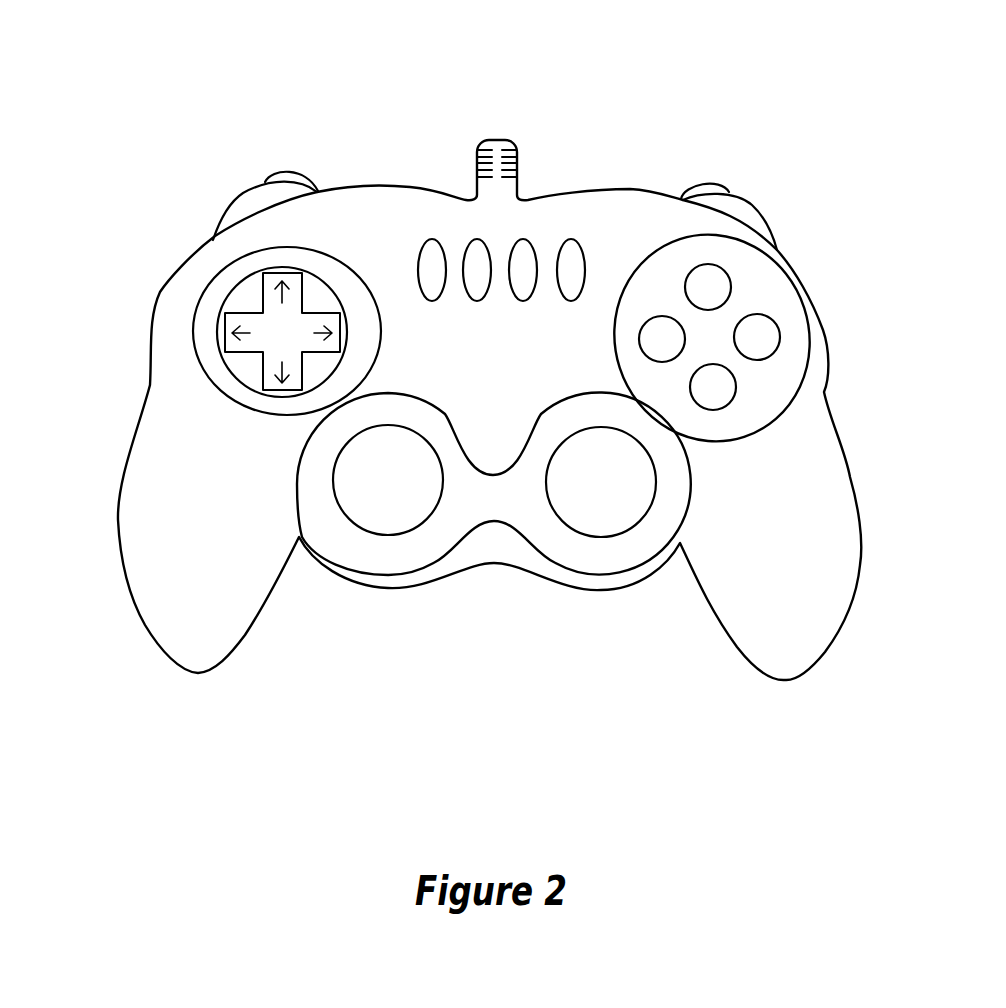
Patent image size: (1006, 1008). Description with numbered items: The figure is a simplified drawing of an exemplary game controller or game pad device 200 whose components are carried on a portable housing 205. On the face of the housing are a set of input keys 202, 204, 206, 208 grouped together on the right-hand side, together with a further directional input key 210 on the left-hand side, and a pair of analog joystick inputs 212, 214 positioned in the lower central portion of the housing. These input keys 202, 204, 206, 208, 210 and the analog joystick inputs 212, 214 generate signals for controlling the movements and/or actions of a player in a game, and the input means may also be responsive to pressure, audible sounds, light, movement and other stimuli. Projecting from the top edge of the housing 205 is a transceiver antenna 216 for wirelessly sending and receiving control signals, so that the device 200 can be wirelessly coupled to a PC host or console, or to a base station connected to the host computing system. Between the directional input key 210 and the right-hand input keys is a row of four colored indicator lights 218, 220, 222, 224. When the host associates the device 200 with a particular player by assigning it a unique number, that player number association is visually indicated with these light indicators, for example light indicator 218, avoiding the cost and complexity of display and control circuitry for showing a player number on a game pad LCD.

The game controller or game pad device 200 is at (535, 352).
The input key 202 is at (686, 288).
The input key 204 is at (648, 322).
The portable housing 205 is at (850, 478).
The input key 206 is at (730, 402).
The input key 208 is at (758, 360).
The input key 210 is at (245, 365).
The analog joystick input 212 is at (404, 493).
The analog joystick input 214 is at (619, 495).
The transceiver antenna 216 is at (517, 163).
The colored indicator light 218 is at (432, 303).
The colored indicator light 220 is at (477, 303).
The colored indicator light 222 is at (524, 303).
The colored indicator light 224 is at (572, 303).